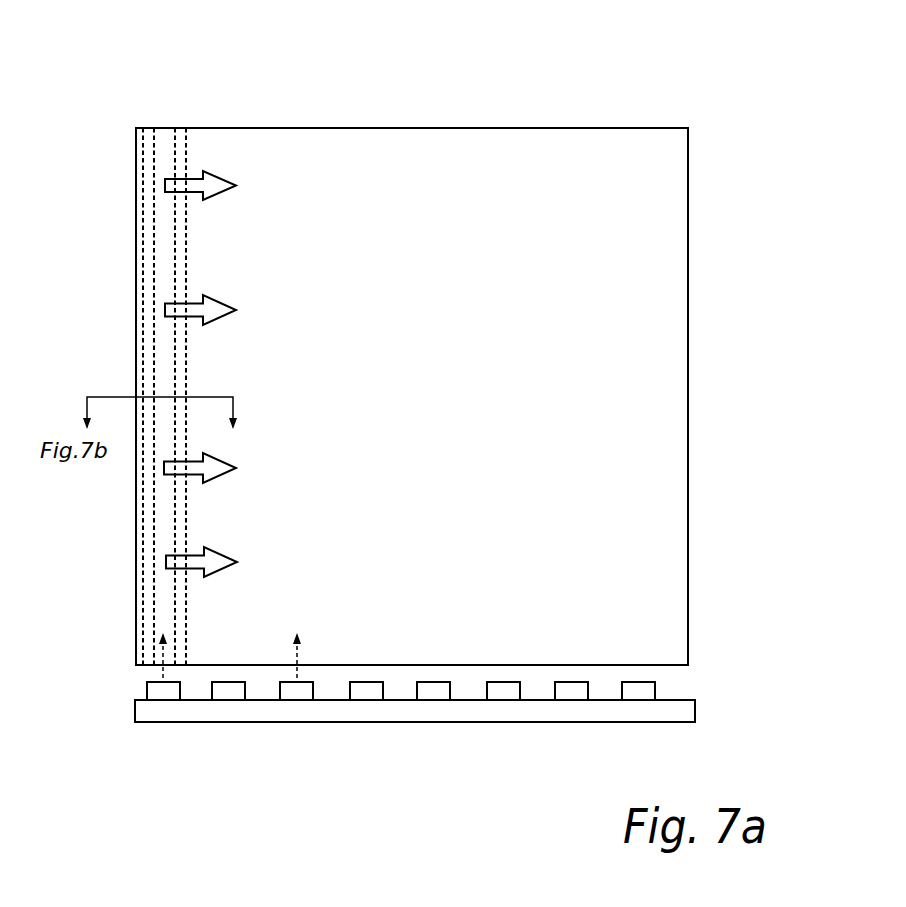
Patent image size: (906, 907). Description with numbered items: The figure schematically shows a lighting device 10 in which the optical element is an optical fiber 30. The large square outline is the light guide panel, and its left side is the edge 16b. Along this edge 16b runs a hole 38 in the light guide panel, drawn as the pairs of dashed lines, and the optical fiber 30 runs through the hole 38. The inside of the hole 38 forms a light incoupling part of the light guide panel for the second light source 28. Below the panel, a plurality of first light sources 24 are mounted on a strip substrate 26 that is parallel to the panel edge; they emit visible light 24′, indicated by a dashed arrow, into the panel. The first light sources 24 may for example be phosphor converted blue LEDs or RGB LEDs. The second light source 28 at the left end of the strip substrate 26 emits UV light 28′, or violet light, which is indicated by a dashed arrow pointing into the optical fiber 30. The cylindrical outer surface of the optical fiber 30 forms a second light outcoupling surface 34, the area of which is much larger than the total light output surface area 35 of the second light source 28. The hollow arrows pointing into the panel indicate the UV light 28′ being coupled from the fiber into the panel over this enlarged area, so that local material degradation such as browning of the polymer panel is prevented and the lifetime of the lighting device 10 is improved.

The lighting device 10 is at (726, 204).
The edge 16b is at (136, 283).
The optical element 30 is at (163, 114).
The hole 38 is at (200, 250).
The second light outcoupling surface 34 is at (177, 332).
The strip substrate 26 is at (673, 707).
The first light sources 24 is at (227, 688).
The visible light 24′ is at (297, 653).
The UV light 28′ is at (163, 672).
The second light source 28 is at (160, 688).
The total light output surface area 35 is at (178, 678).